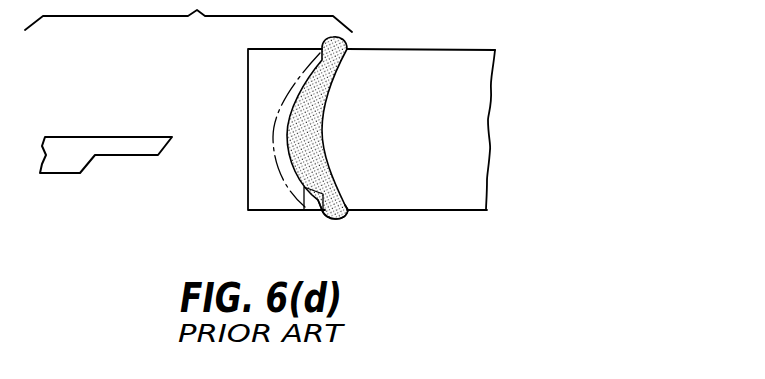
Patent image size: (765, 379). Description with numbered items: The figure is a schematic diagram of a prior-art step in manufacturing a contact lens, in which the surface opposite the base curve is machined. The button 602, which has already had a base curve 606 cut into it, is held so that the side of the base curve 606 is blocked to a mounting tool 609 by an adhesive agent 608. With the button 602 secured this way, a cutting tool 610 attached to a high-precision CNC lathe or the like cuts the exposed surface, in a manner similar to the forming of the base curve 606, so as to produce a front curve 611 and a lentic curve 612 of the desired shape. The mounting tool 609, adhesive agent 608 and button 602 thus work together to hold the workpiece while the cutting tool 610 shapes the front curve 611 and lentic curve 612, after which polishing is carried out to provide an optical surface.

The button 602 is at (255, 83).
The base curve 606 is at (307, 212).
The adhesive agent 608 is at (340, 43).
The mounting tool 609 is at (458, 188).
The cutting tool 610 is at (121, 107).
The front curve 611 is at (280, 176).
The lentic curve 612 is at (318, 214).